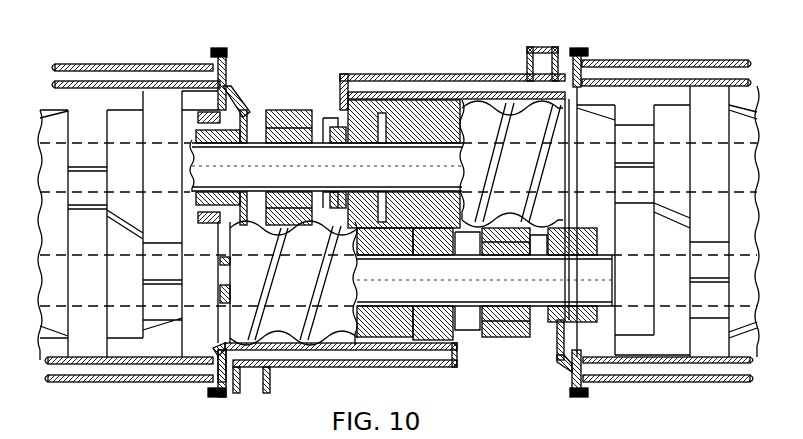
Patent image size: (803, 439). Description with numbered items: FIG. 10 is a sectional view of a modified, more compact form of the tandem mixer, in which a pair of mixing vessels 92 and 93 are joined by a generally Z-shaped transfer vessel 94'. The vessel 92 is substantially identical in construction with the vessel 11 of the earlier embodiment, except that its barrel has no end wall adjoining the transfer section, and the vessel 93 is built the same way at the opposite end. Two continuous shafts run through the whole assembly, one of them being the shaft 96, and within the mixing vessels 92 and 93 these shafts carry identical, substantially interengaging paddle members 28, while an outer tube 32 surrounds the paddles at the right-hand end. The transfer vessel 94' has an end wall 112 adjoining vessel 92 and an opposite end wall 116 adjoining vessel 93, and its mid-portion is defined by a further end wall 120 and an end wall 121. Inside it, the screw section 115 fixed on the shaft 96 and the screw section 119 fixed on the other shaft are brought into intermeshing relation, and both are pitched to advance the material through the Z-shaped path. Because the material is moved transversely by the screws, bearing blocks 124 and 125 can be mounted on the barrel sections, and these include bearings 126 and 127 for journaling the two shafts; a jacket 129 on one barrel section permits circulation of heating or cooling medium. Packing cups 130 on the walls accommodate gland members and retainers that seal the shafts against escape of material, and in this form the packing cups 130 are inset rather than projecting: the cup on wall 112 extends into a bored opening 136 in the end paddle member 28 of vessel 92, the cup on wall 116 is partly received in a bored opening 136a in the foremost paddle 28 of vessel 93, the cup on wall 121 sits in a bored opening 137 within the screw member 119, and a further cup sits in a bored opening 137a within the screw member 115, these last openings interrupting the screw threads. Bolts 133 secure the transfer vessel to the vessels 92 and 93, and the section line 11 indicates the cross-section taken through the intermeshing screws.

The mixing vessel 11 is at (417, 200).
The paddle member 28 is at (96, 132).
The outer tube 32 is at (710, 372).
The mixing vessel 92 is at (138, 60).
The mixing vessel 93 is at (644, 58).
The transfer vessel 94' is at (469, 120).
The shaft 96 is at (541, 322).
The end wall 112 is at (232, 90).
The screw section 115 is at (325, 323).
The end wall 116 is at (567, 358).
The screw section 119 is at (441, 100).
The end wall 120 is at (458, 340).
The end wall 121 is at (341, 80).
The bearing block 124 is at (286, 112).
The bearing block 125 is at (506, 338).
The bearing 126 is at (326, 125).
The bearing 127 is at (497, 343).
The jacket 129 is at (487, 83).
The packing cup 130 is at (241, 122).
The bolt 133 is at (213, 50).
The bored opening 136 is at (228, 100).
The bored opening 136a is at (613, 262).
The bored opening 137 is at (396, 102).
The bored opening 137a is at (425, 360).